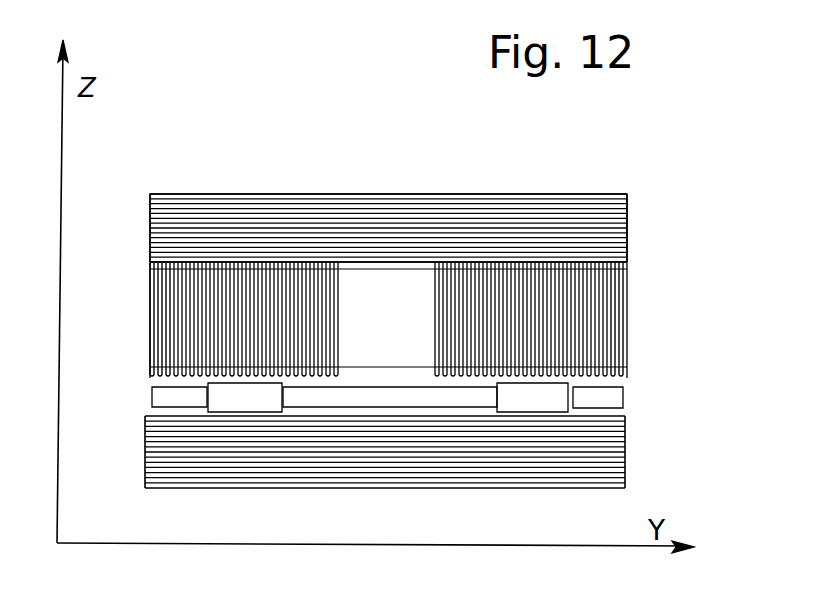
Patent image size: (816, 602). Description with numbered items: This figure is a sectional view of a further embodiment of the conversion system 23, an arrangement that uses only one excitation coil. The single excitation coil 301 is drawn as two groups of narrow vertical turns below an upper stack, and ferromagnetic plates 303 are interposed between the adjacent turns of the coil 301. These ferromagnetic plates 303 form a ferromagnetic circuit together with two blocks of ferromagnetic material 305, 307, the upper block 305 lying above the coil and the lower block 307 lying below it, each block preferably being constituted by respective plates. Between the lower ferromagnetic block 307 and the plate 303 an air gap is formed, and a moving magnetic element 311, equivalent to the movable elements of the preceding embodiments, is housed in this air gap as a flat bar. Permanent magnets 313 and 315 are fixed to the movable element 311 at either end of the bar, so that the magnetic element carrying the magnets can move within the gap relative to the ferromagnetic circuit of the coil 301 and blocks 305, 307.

The conversion system 23 is at (632, 189).
The excitation coil 301 is at (158, 367).
The ferromagnetic plates 303 is at (172, 340).
The block of ferromagnetic material 305 is at (432, 194).
The block of ferromagnetic material 307 is at (382, 472).
The moving magnetic element 311 is at (396, 398).
The permanent magnet 313 is at (218, 403).
The permanent magnet 315 is at (560, 403).